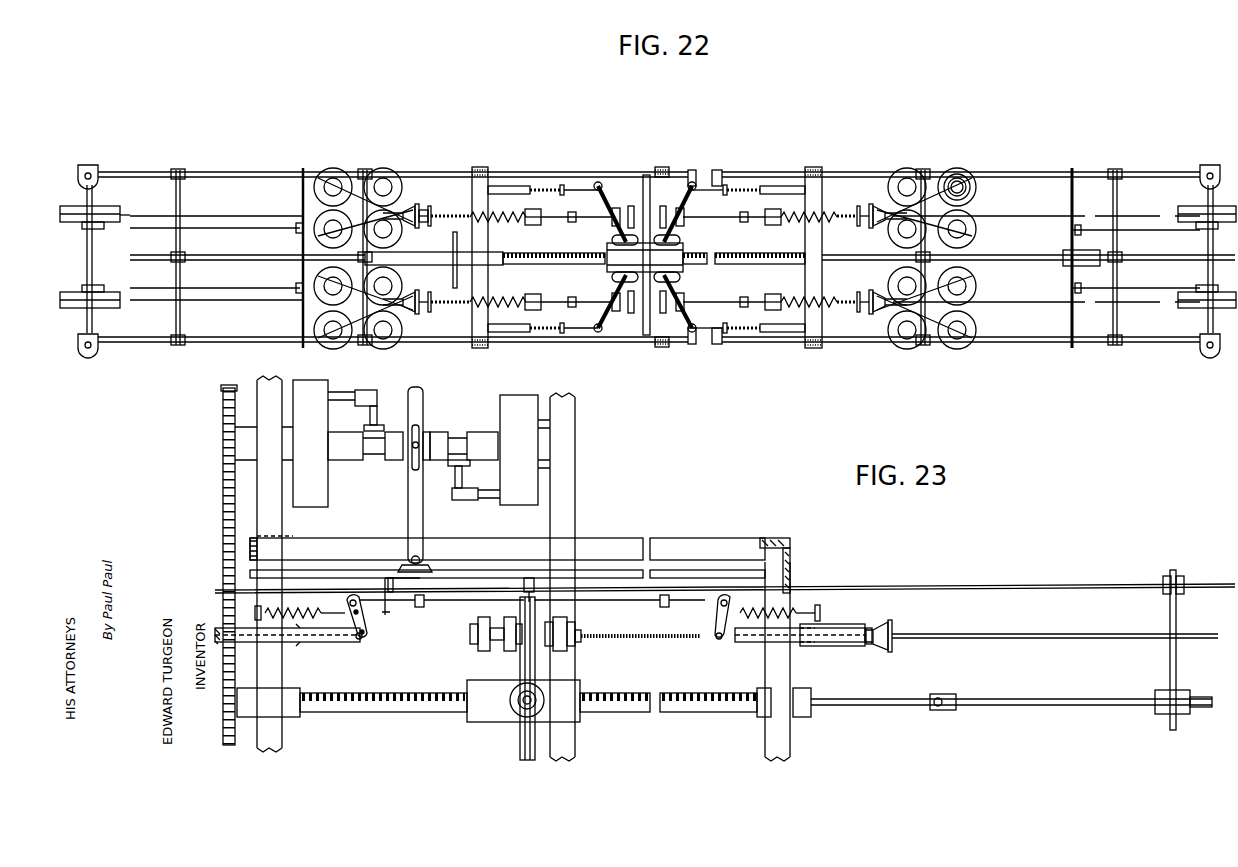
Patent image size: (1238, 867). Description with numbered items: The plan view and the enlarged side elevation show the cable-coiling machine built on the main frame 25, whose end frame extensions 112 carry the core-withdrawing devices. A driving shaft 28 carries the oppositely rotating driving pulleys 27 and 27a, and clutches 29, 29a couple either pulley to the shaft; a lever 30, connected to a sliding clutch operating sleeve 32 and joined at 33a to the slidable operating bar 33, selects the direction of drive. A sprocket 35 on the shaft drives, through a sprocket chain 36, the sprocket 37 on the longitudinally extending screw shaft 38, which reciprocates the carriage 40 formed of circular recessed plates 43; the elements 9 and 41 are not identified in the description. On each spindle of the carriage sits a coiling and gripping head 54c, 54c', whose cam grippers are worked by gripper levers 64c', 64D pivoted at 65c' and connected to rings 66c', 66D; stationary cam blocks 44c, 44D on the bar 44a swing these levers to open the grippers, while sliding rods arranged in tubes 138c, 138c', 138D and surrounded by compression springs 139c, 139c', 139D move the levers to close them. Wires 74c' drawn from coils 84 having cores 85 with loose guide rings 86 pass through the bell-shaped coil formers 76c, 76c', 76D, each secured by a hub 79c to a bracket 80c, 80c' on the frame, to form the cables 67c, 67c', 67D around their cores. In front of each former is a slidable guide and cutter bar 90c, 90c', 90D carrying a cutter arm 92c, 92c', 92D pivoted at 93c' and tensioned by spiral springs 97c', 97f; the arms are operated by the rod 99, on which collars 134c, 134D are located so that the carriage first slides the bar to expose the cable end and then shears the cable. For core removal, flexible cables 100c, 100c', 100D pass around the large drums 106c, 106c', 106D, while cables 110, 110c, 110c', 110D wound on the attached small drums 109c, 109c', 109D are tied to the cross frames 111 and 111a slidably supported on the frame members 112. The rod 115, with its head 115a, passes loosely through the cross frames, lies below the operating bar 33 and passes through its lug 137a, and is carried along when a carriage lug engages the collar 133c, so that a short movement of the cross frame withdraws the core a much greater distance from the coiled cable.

In FIG. 22, the push rod 9 is at (653, 287).
In FIG. 22, the main frame 25 is at (480, 348).
In FIG. 23, the main frame 25 is at (770, 730).
In FIG. 23, the driving pulley 27 is at (328, 486).
In FIG. 23, the driving pulley 27a is at (522, 505).
In FIG. 23, the driving shaft 28 is at (445, 440).
In FIG. 23, the clutch 29 is at (366, 395).
In FIG. 23, the clutch 29a is at (466, 500).
In FIG. 23, the lever 30 is at (421, 500).
In FIG. 23, the sliding clutch operating sleeve 32 is at (393, 460).
In FIG. 23, the slidable operating bar 33 is at (697, 570).
In FIG. 23, the connection 33a is at (428, 566).
In FIG. 23, the sprocket 35 is at (228, 388).
In FIG. 23, the sprocket chain 36 is at (225, 478).
In FIG. 22, the sprocket 37 is at (453, 250).
In FIG. 22, the screw shaft 38 is at (552, 255).
In FIG. 23, the screw shaft 38 is at (660, 712).
In FIG. 22, the reciprocating carriage 40 is at (646, 255).
In FIG. 23, the reciprocating carriage 40 is at (528, 748).
In FIG. 23, the gear 41 is at (516, 708).
In FIG. 22, the circular recessed plate 43 is at (683, 251).
In FIG. 23, the circular recessed plate 43 is at (482, 722).
In FIG. 22, the bar 44a is at (578, 172).
In FIG. 22, the cam block 44c is at (716, 170).
In FIG. 22, the cam block 44D is at (700, 346).
In FIG. 22, the coiling head 54c is at (672, 228).
In FIG. 23, the coiling head 54c is at (622, 645).
In FIG. 22, the coiling and gripping head 54c' is at (635, 225).
In FIG. 23, the coiling and gripping head 54c' is at (500, 642).
In FIG. 22, the gripper lever 64c' is at (621, 180).
In FIG. 22, the gripper lever 64D is at (612, 304).
In FIG. 22, the pivot 65c' is at (637, 253).
In FIG. 23, the ring 66c' is at (454, 644).
In FIG. 22, the ring 66D is at (604, 330).
In FIG. 22, the cable 67c is at (850, 199).
In FIG. 22, the cable 67c' is at (450, 195).
In FIG. 22, the cable 67D is at (850, 300).
In FIG. 22, the wires 74c' is at (389, 169).
In FIG. 22, the coil former 76c is at (885, 176).
In FIG. 23, the coil former 76c is at (1042, 647).
In FIG. 22, the coil former 76c' is at (421, 183).
In FIG. 22, the coil former 76D is at (412, 308).
In FIG. 23, the hub 79c is at (872, 628).
In FIG. 23, the bracket 80c is at (832, 649).
In FIG. 22, the bracket 80c' is at (418, 228).
In FIG. 22, the coils 84 is at (350, 342).
In FIG. 22, the cores 85 is at (968, 190).
In FIG. 22, the guide rings 86 is at (960, 194).
In FIG. 22, the guide and cutter bar 90c is at (809, 208).
In FIG. 23, the guide and cutter bar 90c is at (792, 649).
In FIG. 23, the guide and cutter bar 90c' is at (287, 647).
In FIG. 22, the guide and cutter bar 90D is at (520, 333).
In FIG. 22, the cutter arm 92c is at (762, 211).
In FIG. 22, the cutter arm 92c' is at (550, 211).
In FIG. 23, the cutter arm 92c' is at (378, 630).
In FIG. 22, the cutter arm 92D is at (541, 298).
In FIG. 23, the pivot 93c' is at (354, 634).
In FIG. 22, the spiral spring 97c' is at (498, 259).
In FIG. 23, the spiral spring 97c' is at (300, 605).
In FIG. 23, the spiral spring 97f is at (755, 613).
In FIG. 22, the rod 99 is at (580, 222).
In FIG. 23, the rod 99 is at (575, 601).
In FIG. 22, the flexible cable 100c is at (1186, 209).
In FIG. 22, the flexible cable 100c' is at (110, 205).
In FIG. 22, the flexible cable 100D is at (160, 300).
In FIG. 22, the large drum 106c is at (1211, 157).
In FIG. 22, the large drum 106c' is at (82, 163).
In FIG. 22, the large drum 106D is at (70, 312).
In FIG. 22, the small drum 109c is at (1187, 235).
In FIG. 22, the small drum 109c' is at (118, 233).
In FIG. 22, the small drum 109D is at (90, 292).
In FIG. 23, the flexible cable 110 is at (1182, 584).
In FIG. 22, the flexible cable 110c is at (1136, 244).
In FIG. 22, the flexible cable 110c' is at (212, 235).
In FIG. 22, the flexible cable 110D is at (162, 287).
In FIG. 22, the cross frame 111 is at (1072, 208).
In FIG. 22, the cross frame 111a is at (303, 192).
In FIG. 22, the frame extensions 112 is at (985, 172).
In FIG. 23, the frame extensions 112 is at (1020, 700).
In FIG. 22, the rod 115 is at (440, 262).
In FIG. 23, the rod 115 is at (850, 590).
In FIG. 23, the head 115a is at (1180, 593).
In FIG. 23, the collar 133c is at (532, 578).
In FIG. 22, the collar 134c is at (577, 216).
In FIG. 23, the collar 134c is at (426, 604).
In FIG. 22, the collar 134D is at (742, 298).
In FIG. 23, the projection 137a is at (392, 612).
In FIG. 22, the tube 138c is at (802, 153).
In FIG. 22, the tube 138c' is at (507, 157).
In FIG. 22, the tube 138D is at (785, 333).
In FIG. 22, the compression spring 139c is at (743, 153).
In FIG. 22, the compression spring 139c' is at (560, 143).
In FIG. 22, the compression spring 139D is at (550, 333).